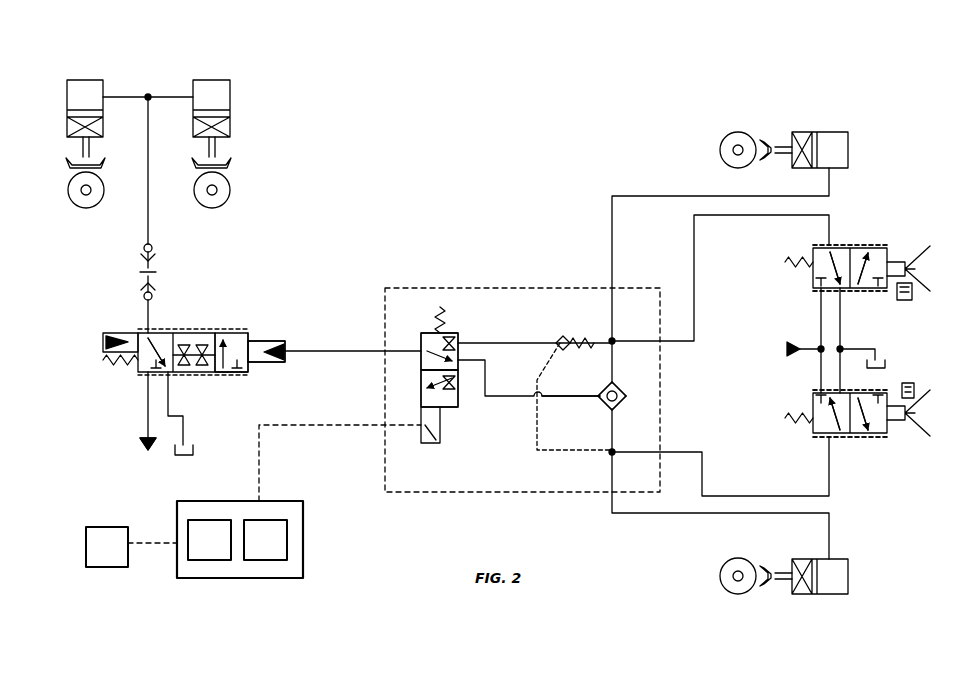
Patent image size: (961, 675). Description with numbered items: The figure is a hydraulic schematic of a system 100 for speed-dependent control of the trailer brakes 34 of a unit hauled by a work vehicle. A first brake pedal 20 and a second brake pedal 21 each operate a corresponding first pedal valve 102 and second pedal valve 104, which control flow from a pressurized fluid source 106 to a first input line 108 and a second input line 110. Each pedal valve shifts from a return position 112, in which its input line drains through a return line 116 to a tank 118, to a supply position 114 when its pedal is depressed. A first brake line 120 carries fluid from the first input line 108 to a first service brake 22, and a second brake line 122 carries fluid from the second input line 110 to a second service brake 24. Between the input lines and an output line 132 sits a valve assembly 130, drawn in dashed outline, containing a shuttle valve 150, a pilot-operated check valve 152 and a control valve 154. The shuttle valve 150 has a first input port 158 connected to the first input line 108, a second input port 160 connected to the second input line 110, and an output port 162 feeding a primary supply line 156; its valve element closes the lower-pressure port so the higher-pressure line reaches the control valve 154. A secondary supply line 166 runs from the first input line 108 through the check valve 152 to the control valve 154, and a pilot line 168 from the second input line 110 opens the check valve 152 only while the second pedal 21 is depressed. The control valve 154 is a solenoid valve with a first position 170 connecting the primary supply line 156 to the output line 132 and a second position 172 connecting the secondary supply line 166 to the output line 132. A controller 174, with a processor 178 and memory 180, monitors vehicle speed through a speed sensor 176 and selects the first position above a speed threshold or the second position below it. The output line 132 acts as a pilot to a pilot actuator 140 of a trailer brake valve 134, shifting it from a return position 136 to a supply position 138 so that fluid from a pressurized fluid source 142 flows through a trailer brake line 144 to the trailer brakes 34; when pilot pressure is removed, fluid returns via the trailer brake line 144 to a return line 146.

The system 100 is at (527, 115).
The first brake pedal 20 is at (915, 262).
The second brake pedal 21 is at (920, 418).
The first service brake 22 is at (830, 130).
The second service brake 24 is at (832, 596).
The trailer brakes 34 is at (88, 78).
The first pedal valve 102 is at (808, 275).
The second pedal valve 104 is at (808, 405).
The pressurized fluid source 106 is at (812, 349).
The first input line 108 is at (718, 215).
The second input line 110 is at (740, 496).
The return position 112 is at (840, 252).
The supply position 114 is at (878, 252).
The return line 116 is at (842, 318).
The tank 118 is at (890, 364).
The first brake line 120 is at (622, 196).
The second brake line 122 is at (640, 513).
The valve assembly 130 is at (407, 285).
The output line 132 is at (330, 351).
The trailer brake valve 134 is at (200, 320).
The return position 136 is at (157, 332).
The supply position 138 is at (228, 368).
The pilot actuator 140 is at (262, 345).
The pressurized fluid source 142 is at (145, 420).
The trailer brake line 144 is at (150, 220).
The return line 146 is at (182, 415).
The shuttle valve 150 is at (628, 396).
The pilot-operated check valve 152 is at (560, 338).
The control valve 154 is at (415, 375).
The primary supply line 156 is at (490, 396).
The first input port 158 is at (618, 385).
The second input port 160 is at (618, 410).
The output port 162 is at (600, 397).
The secondary supply line 166 is at (495, 343).
The pilot line 168 is at (537, 452).
The first position 170 is at (425, 340).
The second position 172 is at (425, 398).
The controller 174 is at (308, 545).
The speed sensor 176 is at (119, 554).
The processor 178 is at (221, 548).
The memory device 180 is at (277, 548).